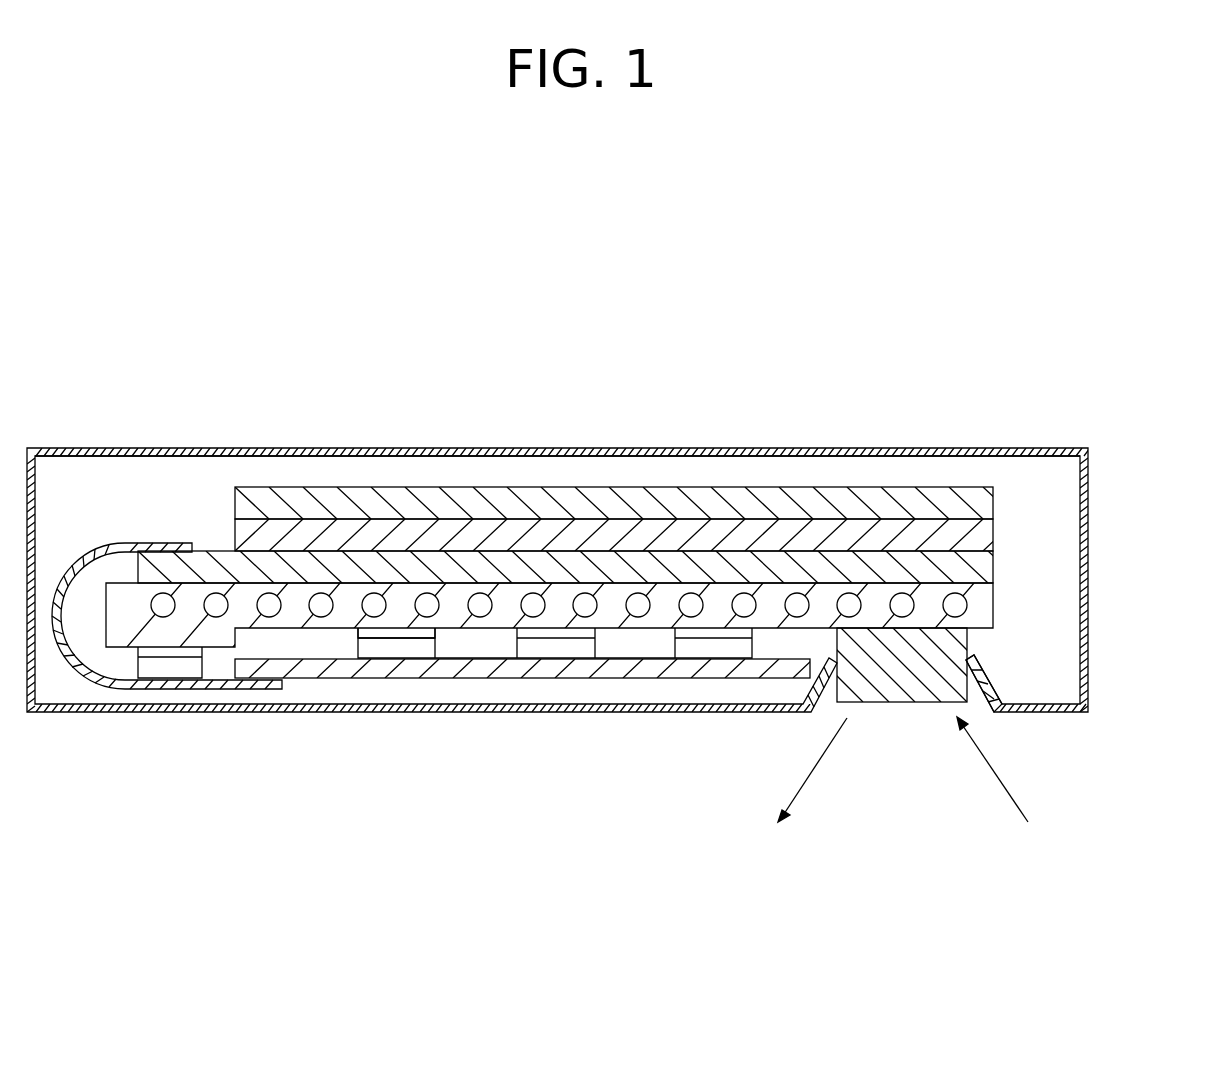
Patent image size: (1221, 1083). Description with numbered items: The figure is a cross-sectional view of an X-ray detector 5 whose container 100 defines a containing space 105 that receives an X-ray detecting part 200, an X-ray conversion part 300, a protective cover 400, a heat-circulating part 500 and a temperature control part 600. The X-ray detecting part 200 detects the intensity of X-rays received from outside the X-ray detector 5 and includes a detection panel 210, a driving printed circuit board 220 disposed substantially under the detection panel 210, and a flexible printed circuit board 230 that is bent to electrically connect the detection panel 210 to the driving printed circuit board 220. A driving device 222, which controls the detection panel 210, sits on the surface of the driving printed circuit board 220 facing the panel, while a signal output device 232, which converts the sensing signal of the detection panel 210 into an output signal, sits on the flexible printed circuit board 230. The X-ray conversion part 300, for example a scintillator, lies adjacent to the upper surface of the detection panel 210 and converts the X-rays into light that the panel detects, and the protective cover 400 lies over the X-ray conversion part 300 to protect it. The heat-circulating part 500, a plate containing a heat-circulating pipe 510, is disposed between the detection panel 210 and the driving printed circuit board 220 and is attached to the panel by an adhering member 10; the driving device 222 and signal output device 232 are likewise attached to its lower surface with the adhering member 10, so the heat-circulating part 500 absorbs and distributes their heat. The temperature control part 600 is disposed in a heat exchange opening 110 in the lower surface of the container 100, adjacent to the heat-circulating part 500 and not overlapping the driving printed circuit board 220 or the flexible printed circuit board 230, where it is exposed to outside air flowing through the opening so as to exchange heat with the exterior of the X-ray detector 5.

The X-ray detector 5 is at (1002, 418).
The adhering member 10 is at (413, 634).
The container 100 is at (1085, 522).
The containing space 105 is at (1043, 472).
The heat exchange opening 110 is at (903, 708).
The X-ray detecting part 200 is at (925, 568).
The detection panel 210 is at (205, 553).
The driving printed circuit board 220 is at (305, 670).
The driving device 222 is at (383, 652).
The flexible printed circuit board 230 is at (80, 677).
The signal output device 232 is at (168, 670).
The X-ray conversion part 300 is at (808, 520).
The protective cover 400 is at (680, 500).
The heat-circulating part 500 is at (985, 605).
The heat-circulating pipe 510 is at (583, 600).
The temperature control part 600 is at (960, 673).